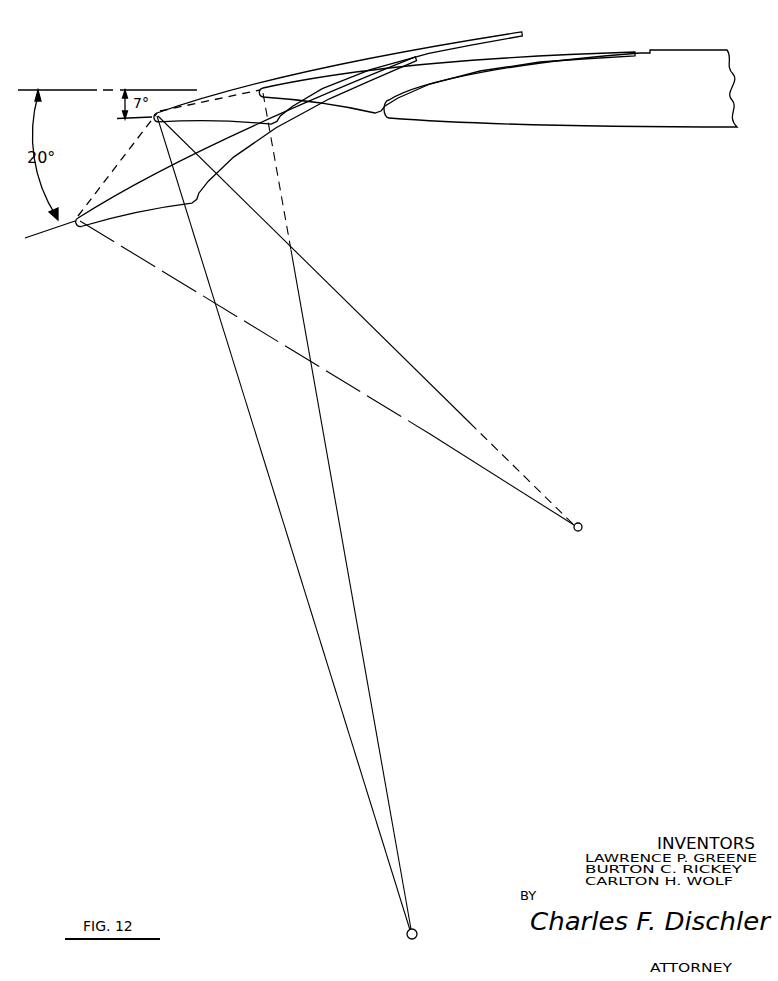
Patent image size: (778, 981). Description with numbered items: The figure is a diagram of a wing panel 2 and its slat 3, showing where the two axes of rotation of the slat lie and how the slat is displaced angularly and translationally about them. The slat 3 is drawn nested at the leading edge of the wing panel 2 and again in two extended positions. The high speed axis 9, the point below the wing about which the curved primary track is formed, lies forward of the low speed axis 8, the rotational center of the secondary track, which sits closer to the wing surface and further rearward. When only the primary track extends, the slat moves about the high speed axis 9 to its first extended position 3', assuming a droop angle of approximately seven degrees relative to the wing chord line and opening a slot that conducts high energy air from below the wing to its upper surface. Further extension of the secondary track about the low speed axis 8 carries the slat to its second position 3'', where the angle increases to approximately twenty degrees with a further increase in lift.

The wing panel 2 is at (677, 62).
The slat 3 is at (447, 71).
The first extended position of slat 3' is at (338, 73).
The second extended position of slat 3'' is at (246, 142).
The low speed axis 8 is at (573, 531).
The high speed axis 9 is at (408, 929).